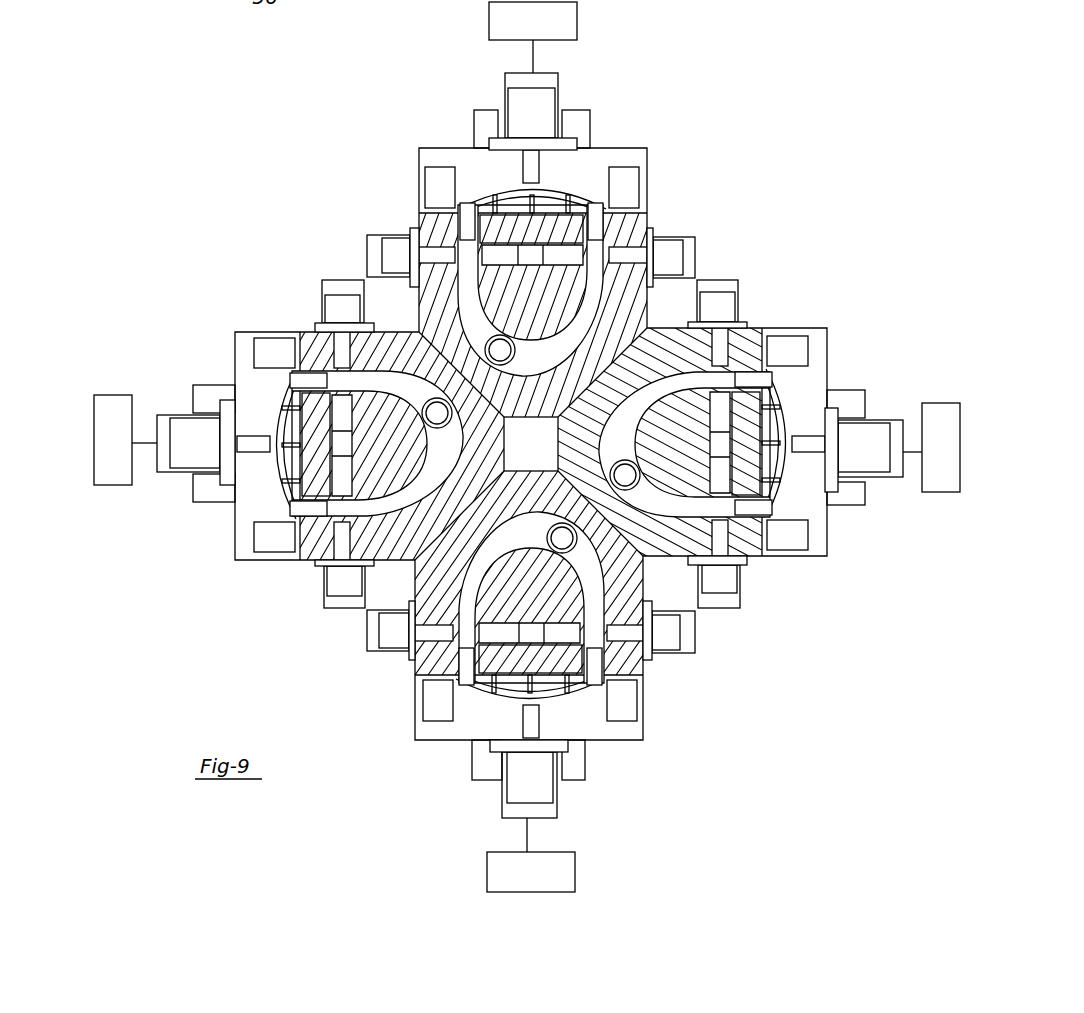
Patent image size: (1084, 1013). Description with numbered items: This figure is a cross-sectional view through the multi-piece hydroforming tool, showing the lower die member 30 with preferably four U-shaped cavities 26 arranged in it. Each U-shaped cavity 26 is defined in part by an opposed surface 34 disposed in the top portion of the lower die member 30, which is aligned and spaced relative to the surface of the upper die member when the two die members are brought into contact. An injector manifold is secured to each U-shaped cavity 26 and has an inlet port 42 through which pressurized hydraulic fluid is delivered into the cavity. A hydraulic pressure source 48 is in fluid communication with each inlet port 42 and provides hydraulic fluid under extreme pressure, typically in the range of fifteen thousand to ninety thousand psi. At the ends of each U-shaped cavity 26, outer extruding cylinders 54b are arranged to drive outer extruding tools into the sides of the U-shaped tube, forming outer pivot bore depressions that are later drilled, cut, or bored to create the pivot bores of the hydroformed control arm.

The U-shaped cavity 26 is at (548, 350).
The lower die member 30 is at (725, 225).
The opposed surface 34 is at (468, 300).
The inlet port 42 is at (187, 455).
The hydraulic pressure source 48 is at (574, 24).
The outer extruding cylinder 54b is at (396, 243).